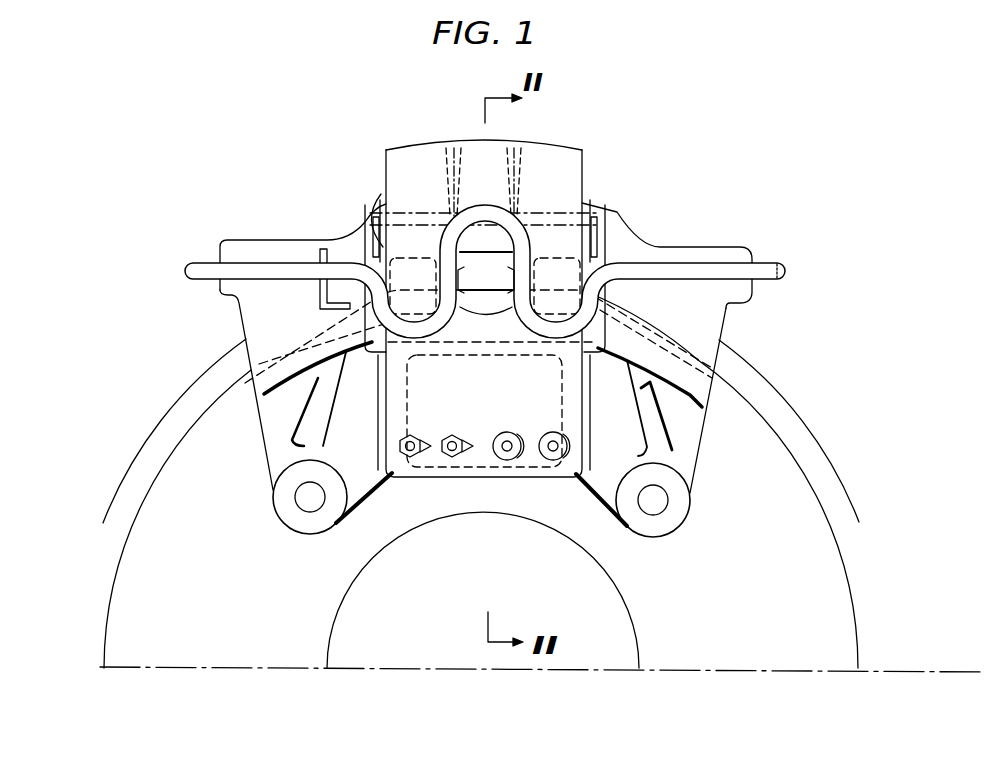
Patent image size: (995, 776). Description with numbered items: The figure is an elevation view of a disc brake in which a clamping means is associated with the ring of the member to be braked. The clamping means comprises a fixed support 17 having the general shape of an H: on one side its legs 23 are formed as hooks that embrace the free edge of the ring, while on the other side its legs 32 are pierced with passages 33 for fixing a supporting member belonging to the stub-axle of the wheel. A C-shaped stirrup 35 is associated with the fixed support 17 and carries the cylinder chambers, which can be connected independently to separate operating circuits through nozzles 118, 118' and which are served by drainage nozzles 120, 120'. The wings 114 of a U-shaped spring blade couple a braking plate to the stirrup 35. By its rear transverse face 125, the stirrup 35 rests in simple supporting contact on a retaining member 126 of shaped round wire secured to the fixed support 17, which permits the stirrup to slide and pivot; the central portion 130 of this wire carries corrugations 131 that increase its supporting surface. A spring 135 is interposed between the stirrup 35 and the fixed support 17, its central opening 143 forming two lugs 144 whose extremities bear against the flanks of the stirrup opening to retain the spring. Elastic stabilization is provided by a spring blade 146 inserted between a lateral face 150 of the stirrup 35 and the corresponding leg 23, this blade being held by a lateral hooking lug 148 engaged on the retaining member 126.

The fixed support 17 is at (256, 431).
The legs 23 is at (338, 243).
The legs 32 is at (280, 453).
The passages 33 is at (304, 502).
The stirrup 35 is at (586, 150).
The wings 114 is at (463, 163).
The nozzle 118 is at (559, 473).
The nozzle 118' is at (514, 472).
The drainage nozzle 120 is at (457, 473).
The drainage nozzle 120' is at (405, 475).
The rear transverse face 125 is at (567, 167).
The retaining member 126 is at (770, 259).
The central portion 130 is at (338, 291).
The corrugations 131 is at (482, 204).
The spring 135 is at (497, 233).
The opening 143 is at (486, 271).
The lugs 144 is at (460, 275).
The spring blade 146 is at (372, 197).
The lateral hooking lug 148 is at (337, 313).
The lateral face 150 is at (385, 152).